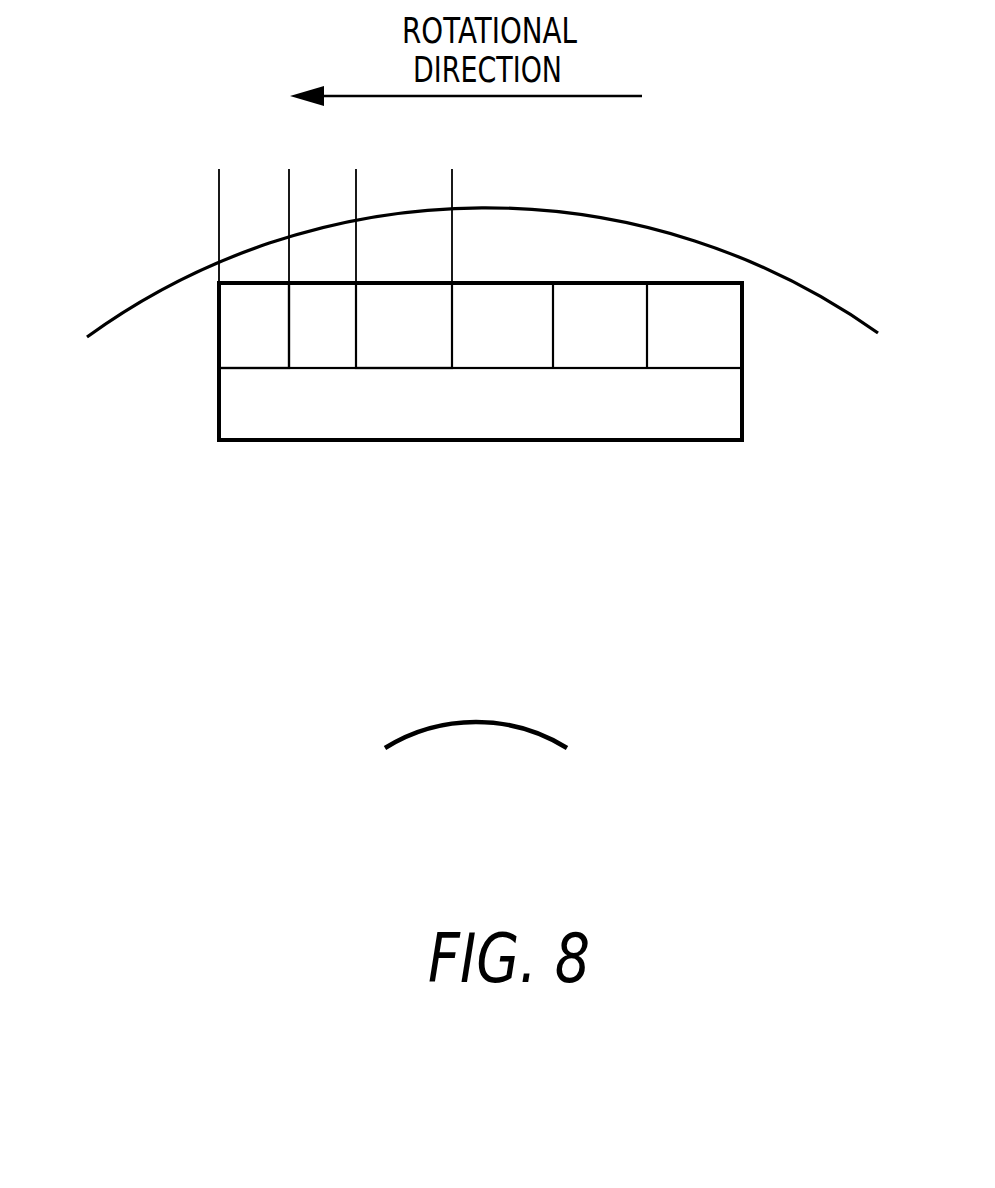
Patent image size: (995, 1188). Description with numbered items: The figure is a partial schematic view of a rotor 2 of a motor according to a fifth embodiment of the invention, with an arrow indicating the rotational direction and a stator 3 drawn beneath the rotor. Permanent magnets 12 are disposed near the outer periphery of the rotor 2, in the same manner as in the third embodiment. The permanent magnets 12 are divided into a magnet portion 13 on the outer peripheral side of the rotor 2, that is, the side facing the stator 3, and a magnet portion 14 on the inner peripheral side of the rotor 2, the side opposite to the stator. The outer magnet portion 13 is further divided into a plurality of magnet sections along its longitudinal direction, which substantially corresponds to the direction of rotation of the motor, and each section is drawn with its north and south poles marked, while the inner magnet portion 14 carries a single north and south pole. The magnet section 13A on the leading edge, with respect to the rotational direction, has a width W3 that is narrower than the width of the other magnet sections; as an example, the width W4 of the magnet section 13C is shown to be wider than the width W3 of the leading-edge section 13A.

The rotor 2 is at (671, 232).
The stator 3 is at (528, 728).
The permanent magnets 12 is at (742, 331).
The magnet portion 13 is at (417, 303).
The magnet section 13A is at (258, 283).
The magnet section 13C is at (415, 283).
The magnet portion 14 is at (218, 424).
The width W3 is at (280, 173).
The width W4 is at (443, 173).